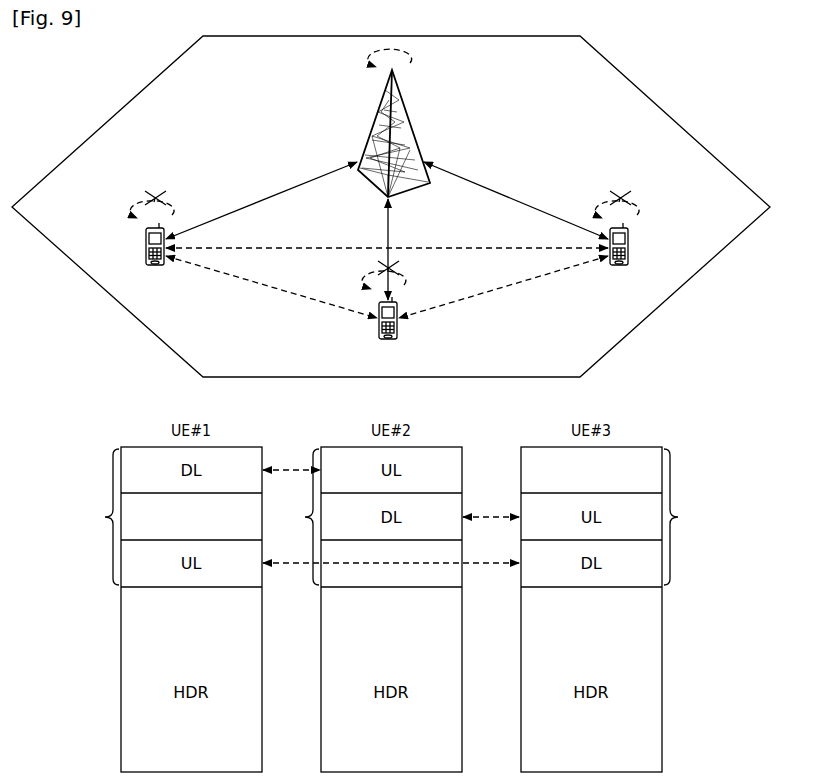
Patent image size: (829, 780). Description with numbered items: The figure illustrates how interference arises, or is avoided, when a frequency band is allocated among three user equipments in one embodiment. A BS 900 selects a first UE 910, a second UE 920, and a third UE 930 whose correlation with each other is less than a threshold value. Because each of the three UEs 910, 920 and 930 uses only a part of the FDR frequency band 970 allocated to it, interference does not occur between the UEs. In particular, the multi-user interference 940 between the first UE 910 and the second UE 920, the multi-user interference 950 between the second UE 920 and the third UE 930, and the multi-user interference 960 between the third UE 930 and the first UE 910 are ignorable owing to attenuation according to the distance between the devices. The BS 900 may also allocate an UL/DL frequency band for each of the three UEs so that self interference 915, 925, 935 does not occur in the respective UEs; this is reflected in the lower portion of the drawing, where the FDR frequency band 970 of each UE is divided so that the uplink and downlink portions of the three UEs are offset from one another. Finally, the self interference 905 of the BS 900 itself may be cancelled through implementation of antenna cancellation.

The BS 900 is at (416, 141).
The self interference of the BS 905 is at (418, 62).
The first UE 910 is at (144, 240).
The self interference 915 is at (155, 196).
The second UE 920 is at (399, 330).
The self interference 925 is at (410, 282).
The third UE 930 is at (630, 243).
The self interference 935 is at (620, 196).
The multi-user interference 940 is at (238, 280).
The multi-user interference 950 is at (507, 287).
The multi-user interference 960 is at (328, 246).
The FDR frequency band 970 is at (391, 517).